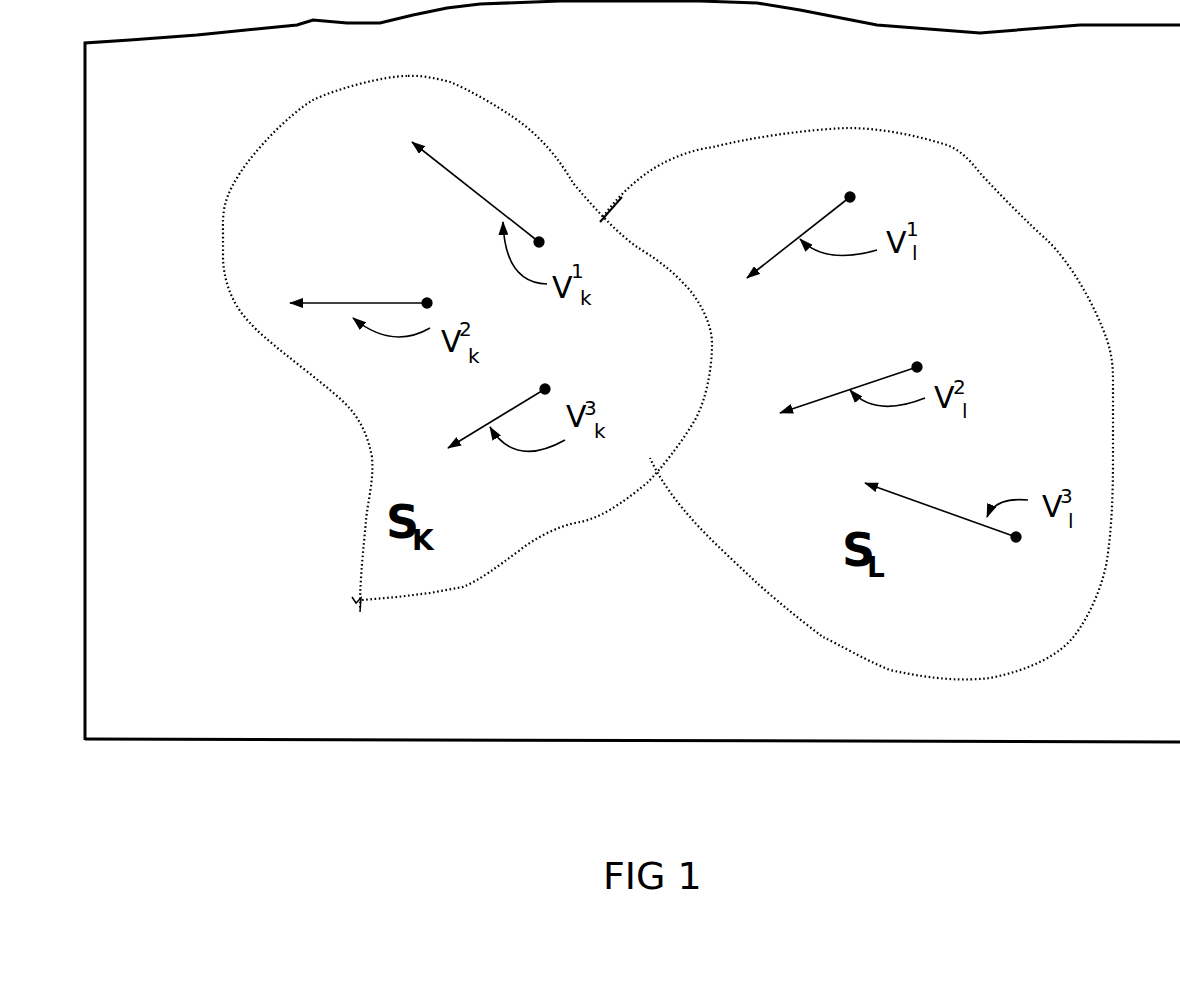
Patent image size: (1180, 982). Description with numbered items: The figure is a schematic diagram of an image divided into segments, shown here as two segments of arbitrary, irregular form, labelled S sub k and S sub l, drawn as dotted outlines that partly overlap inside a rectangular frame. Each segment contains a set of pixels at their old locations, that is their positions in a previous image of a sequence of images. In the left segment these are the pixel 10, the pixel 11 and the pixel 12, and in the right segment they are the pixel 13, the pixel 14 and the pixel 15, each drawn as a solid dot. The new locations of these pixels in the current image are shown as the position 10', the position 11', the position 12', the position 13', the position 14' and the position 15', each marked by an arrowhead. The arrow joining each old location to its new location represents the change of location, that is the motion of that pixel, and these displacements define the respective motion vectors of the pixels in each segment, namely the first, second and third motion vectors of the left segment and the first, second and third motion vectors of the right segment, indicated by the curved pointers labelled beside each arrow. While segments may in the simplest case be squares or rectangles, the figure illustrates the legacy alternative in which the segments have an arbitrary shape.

The pixel 10 is at (496, 194).
The new location of pixel 10' is at (375, 156).
The pixel 11 is at (382, 303).
The new location of pixel 11' is at (267, 276).
The pixel 12 is at (517, 403).
The new location of pixel 12' is at (456, 489).
The pixel 13 is at (819, 222).
The new location of pixel 13' is at (721, 256).
The pixel 14 is at (872, 378).
The new location of pixel 14' is at (769, 386).
The pixel 15 is at (960, 524).
The new location of pixel 15' is at (835, 479).